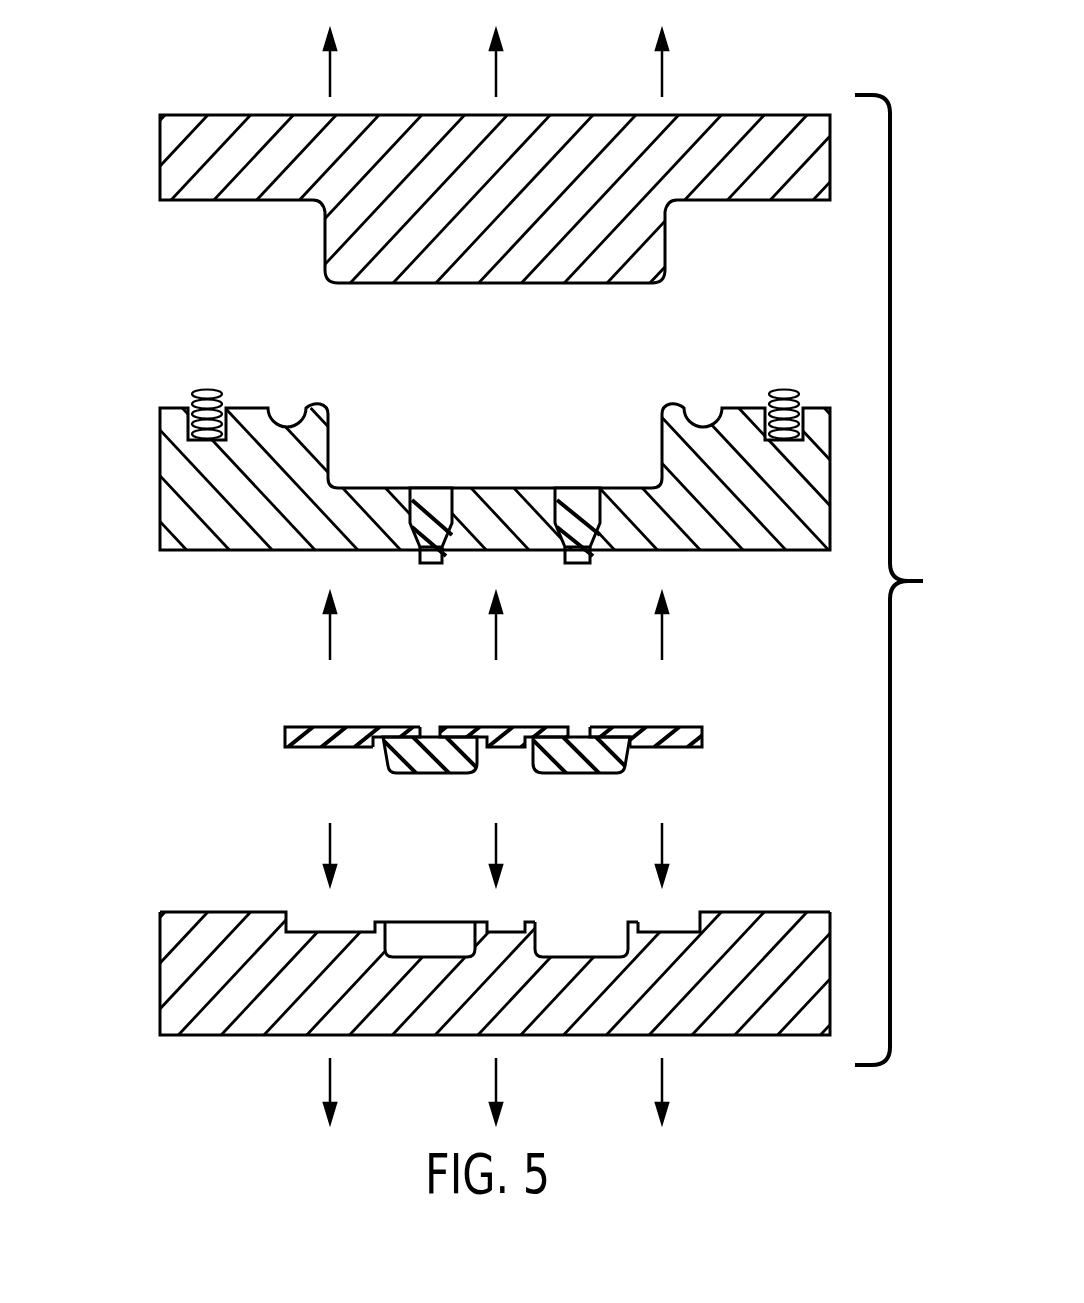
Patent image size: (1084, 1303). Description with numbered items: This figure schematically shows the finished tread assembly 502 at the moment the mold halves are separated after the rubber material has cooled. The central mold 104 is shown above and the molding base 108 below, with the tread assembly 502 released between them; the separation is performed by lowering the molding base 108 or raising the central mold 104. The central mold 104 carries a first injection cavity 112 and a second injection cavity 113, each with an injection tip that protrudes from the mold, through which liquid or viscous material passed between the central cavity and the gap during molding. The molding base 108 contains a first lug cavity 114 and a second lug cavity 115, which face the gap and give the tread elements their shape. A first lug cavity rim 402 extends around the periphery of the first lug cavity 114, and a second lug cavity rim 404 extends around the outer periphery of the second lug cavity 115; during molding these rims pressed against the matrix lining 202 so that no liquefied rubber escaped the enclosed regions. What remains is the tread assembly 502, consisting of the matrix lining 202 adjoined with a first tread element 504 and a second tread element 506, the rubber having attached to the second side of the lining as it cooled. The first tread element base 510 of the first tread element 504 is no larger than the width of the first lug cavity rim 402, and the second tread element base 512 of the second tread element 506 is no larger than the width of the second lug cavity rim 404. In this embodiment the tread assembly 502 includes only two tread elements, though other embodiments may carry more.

The central mold 104 is at (511, 477).
The molding base 108 is at (492, 932).
The first injection cavity 112 is at (575, 500).
The second injection cavity 113 is at (437, 497).
The first lug cavity 114 is at (582, 937).
The second lug cavity 115 is at (423, 932).
The matrix lining 202 is at (507, 738).
The first lug cavity rim 402 is at (635, 922).
The second lug cavity rim 404 is at (380, 922).
The tread assembly 502 is at (435, 736).
The first tread element 504 is at (598, 763).
The second tread element 506 is at (398, 765).
The first tread element base 510 is at (632, 742).
The second tread element base 512 is at (380, 742).